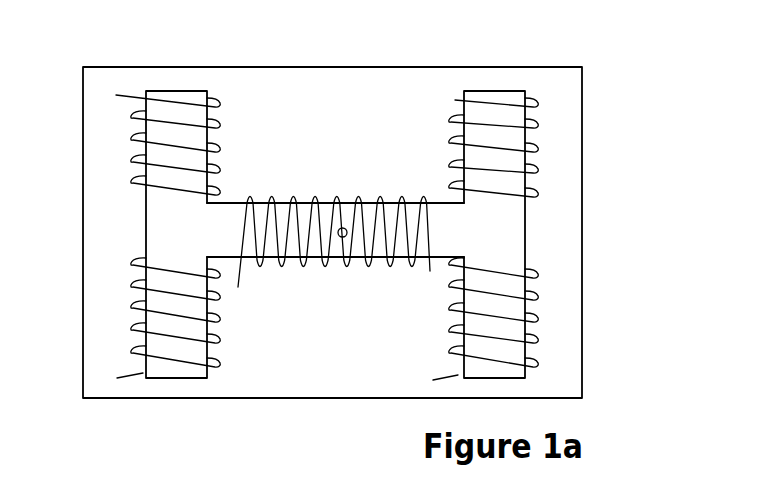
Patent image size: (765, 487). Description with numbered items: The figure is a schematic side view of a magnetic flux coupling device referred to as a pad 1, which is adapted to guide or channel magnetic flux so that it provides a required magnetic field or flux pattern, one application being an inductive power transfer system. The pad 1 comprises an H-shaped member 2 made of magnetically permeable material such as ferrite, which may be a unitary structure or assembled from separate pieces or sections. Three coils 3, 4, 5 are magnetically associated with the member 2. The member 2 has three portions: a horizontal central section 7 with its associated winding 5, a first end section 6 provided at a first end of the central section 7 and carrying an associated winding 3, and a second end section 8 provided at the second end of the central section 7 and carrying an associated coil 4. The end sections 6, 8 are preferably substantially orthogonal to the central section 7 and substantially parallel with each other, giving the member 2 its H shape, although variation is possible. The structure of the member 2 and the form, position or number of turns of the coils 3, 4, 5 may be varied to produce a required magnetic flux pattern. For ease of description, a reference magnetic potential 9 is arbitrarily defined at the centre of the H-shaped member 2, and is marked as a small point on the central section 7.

The pad 1 is at (543, 88).
The H-shaped member 2 is at (361, 234).
The coil 3 is at (117, 96).
The coil 4 is at (527, 152).
The coil 5 is at (251, 202).
The first end section 6 is at (163, 232).
The central section 7 is at (297, 223).
The second end section 8 is at (497, 213).
The reference magnetic potential 9 is at (344, 228).